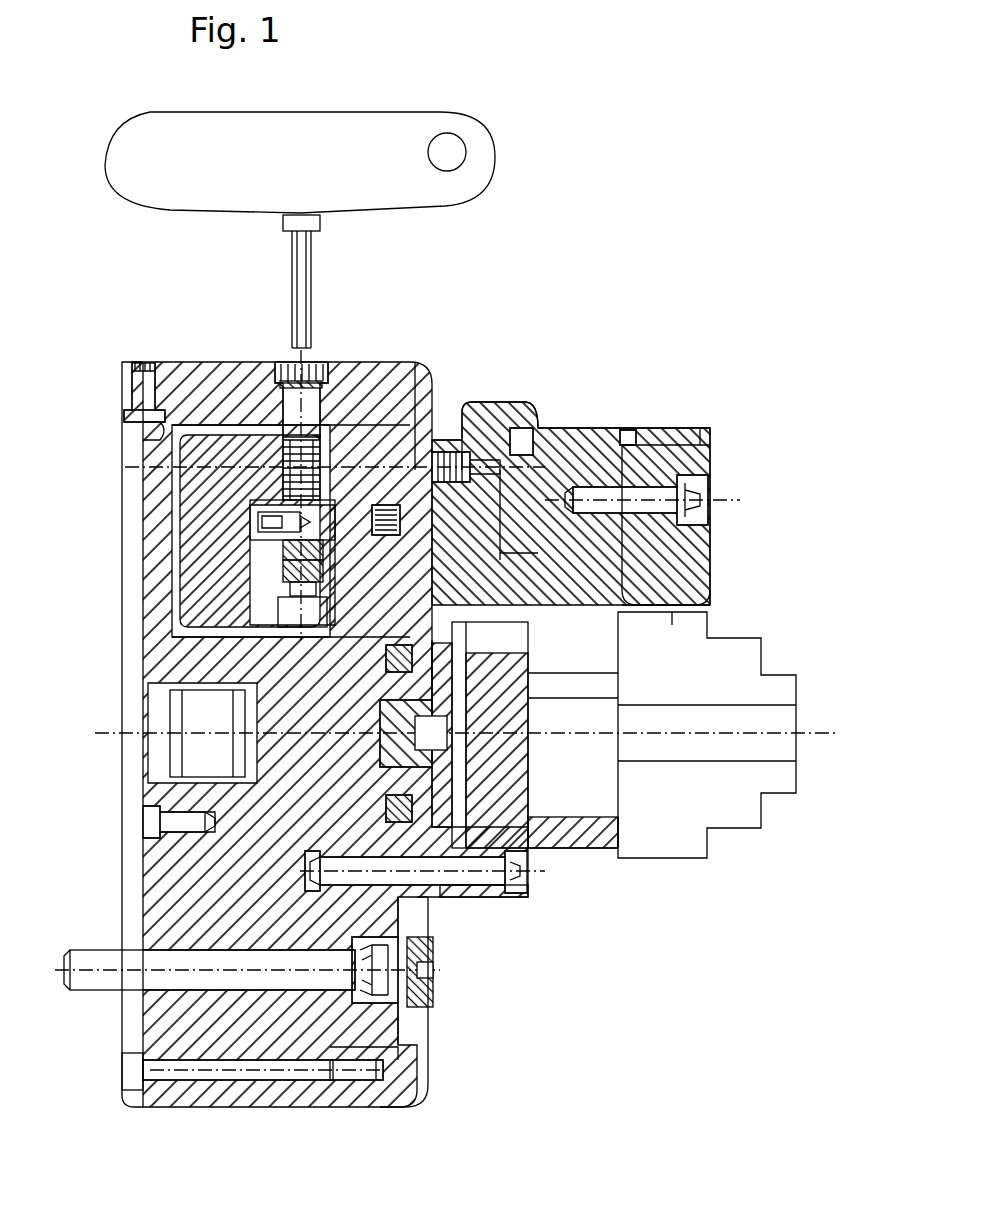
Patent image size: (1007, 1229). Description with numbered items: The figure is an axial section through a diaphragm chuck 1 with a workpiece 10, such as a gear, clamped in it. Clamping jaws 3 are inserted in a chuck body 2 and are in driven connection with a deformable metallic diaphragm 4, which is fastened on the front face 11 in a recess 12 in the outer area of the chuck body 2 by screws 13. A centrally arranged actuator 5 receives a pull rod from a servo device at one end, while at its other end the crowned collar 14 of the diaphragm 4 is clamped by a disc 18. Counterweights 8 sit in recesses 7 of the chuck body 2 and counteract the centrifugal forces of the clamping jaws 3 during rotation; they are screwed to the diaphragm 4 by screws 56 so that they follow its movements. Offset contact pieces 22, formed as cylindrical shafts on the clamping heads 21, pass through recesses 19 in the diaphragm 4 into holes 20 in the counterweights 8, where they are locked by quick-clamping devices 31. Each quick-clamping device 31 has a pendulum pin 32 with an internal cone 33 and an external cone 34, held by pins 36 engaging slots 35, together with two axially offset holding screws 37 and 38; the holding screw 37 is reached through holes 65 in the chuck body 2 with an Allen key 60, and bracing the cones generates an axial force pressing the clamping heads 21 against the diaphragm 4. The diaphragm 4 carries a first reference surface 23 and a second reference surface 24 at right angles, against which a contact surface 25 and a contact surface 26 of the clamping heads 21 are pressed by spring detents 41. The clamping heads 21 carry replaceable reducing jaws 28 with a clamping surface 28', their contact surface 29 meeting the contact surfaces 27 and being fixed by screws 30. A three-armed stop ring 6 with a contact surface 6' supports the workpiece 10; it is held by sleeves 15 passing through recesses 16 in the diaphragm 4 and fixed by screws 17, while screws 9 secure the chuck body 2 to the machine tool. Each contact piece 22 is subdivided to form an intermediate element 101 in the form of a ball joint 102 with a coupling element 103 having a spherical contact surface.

The diaphragm chuck 1 is at (605, 262).
The chuck body 2 is at (162, 362).
The clamping jaws 3 is at (636, 428).
The diaphragm 4 is at (450, 388).
The actuator 5 is at (160, 800).
The stop ring 6 is at (601, 871).
The contact surface 6' is at (665, 871).
The recesses 7 is at (240, 362).
The counterweights 8 is at (388, 430).
The screws 9 is at (367, 997).
The workpiece 10 is at (738, 842).
The front face 11 is at (402, 1030).
The recess 12 is at (427, 1075).
The screws 13 is at (128, 1078).
The crowned collar 14 is at (472, 885).
The sleeves 15 is at (436, 978).
The recesses 16 is at (432, 882).
The screws 17 is at (522, 886).
The disc 18 is at (590, 848).
The recesses 19 is at (518, 545).
The holes 20 is at (510, 590).
The clamping heads 21 is at (683, 440).
The contact pieces 22 is at (455, 614).
The first reference surface 23 is at (565, 440).
The second reference surface 24 is at (548, 530).
The contact surface 25 is at (525, 455).
The contact surface 26 is at (518, 430).
The contact surfaces 27 is at (716, 440).
The reducing jaws 28 is at (711, 525).
The clamping surface 28' is at (714, 599).
The contact surface 29 is at (710, 436).
The screws 30 is at (712, 495).
The quick-clamping devices 31 is at (220, 428).
The pendulum pin 32 is at (300, 630).
The internal cone 33 is at (290, 440).
The external cone 34 is at (287, 572).
The slots 35 is at (300, 552).
The pins 36 is at (278, 518).
The holding screw 37 is at (345, 425).
The holding screw 38 is at (240, 685).
The spring detents 41 is at (510, 378).
The screws 56 is at (116, 466).
The Allen key 60 is at (406, 110).
The holes 65 is at (318, 372).
The intermediate element 101 is at (456, 395).
The ball joint 102 is at (499, 703).
The coupling element 103 is at (478, 398).